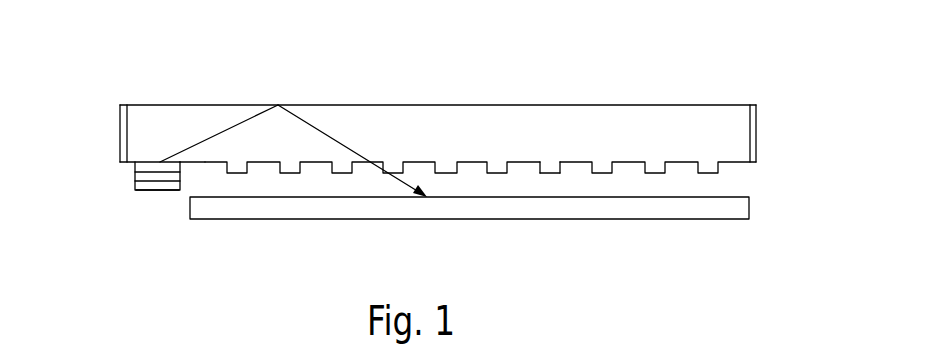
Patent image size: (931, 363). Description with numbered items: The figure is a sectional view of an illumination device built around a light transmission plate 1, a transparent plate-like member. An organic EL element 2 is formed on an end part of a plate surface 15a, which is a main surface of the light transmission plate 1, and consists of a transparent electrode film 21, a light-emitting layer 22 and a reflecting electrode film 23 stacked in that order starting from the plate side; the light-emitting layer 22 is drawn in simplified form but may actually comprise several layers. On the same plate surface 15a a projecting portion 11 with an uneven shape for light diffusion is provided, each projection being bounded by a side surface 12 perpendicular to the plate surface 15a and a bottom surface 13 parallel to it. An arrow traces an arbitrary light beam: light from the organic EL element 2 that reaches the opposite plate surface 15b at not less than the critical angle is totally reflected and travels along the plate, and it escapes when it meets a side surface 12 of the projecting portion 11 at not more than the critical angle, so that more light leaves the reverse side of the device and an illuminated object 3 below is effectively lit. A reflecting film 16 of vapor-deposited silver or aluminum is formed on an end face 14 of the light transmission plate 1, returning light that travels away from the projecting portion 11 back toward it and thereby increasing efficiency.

The light transmission plate 1 is at (528, 115).
The organic EL element 2 is at (106, 178).
The illuminated object 3 is at (680, 213).
The projecting portion 11 is at (547, 170).
The side surface 12 is at (563, 168).
The bottom surface 13 is at (552, 170).
The end face 14 is at (128, 123).
The plate surface 15a is at (205, 162).
The plate surface 15b is at (375, 104).
The reflecting film 16 is at (120, 128).
The transparent electrode film 21 is at (175, 176).
The light-emitting layer 22 is at (165, 176).
The reflecting electrode film 23 is at (148, 188).